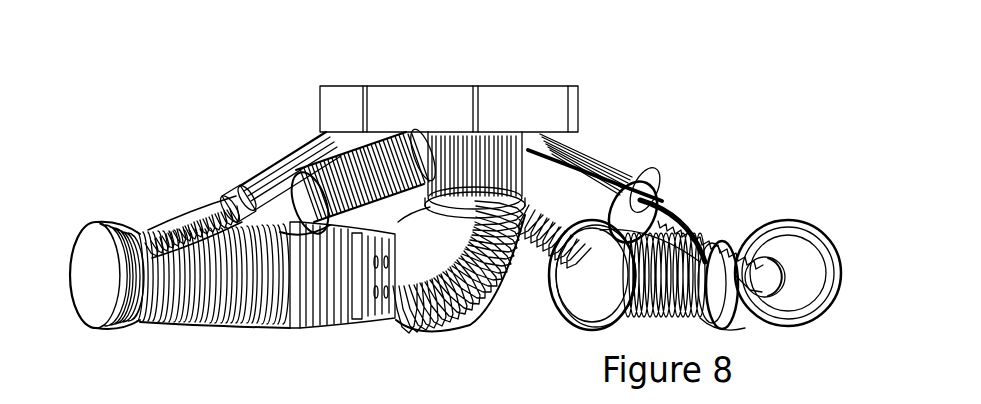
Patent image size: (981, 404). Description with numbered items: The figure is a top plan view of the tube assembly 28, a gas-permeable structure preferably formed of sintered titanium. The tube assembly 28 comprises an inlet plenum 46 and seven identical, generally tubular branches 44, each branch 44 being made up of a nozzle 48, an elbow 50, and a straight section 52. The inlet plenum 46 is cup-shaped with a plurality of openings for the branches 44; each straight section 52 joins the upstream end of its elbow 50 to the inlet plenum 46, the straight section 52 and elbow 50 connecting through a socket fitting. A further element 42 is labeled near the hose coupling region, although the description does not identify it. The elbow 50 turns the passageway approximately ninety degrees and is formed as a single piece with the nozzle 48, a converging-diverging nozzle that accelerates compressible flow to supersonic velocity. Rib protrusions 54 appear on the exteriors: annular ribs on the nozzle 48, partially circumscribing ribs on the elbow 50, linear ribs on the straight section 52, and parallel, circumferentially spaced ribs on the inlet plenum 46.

The tube assembly 28 is at (572, 82).
The hose coupling collar 42 is at (350, 313).
The branch 44 is at (725, 232).
The inlet plenum 46 is at (506, 105).
The nozzle 48 is at (577, 305).
The elbow 50 is at (225, 298).
The straight section 52 is at (283, 167).
The rib protrusion 54 is at (365, 105).